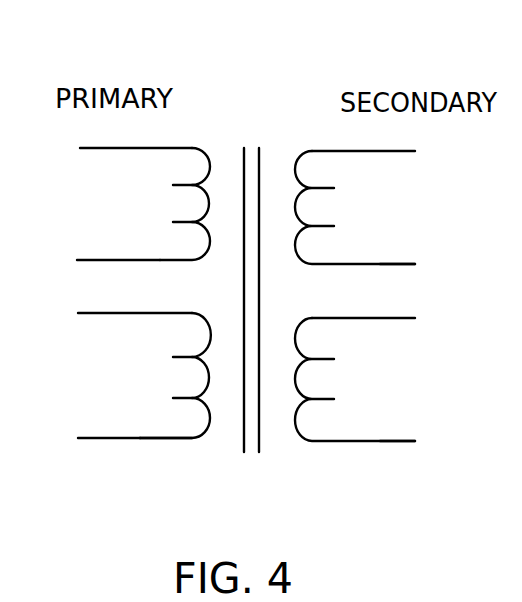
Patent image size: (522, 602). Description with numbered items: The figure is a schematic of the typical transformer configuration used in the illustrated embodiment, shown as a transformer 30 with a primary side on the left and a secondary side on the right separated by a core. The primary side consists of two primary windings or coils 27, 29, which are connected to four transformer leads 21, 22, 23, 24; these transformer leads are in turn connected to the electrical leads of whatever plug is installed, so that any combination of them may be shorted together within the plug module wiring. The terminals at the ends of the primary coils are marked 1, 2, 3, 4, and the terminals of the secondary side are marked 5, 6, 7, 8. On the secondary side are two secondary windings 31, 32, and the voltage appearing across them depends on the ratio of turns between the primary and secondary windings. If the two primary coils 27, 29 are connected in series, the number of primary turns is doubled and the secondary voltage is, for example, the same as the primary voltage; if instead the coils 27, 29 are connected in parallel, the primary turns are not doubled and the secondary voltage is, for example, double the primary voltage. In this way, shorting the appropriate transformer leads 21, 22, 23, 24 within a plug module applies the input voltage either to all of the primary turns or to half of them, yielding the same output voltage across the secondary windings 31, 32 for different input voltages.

The primary winding terminal 1 is at (93, 439).
The primary winding terminal 2 is at (116, 313).
The primary winding terminal 3 is at (100, 258).
The primary winding terminal 4 is at (116, 146).
The secondary winding terminal 5 is at (378, 153).
The secondary winding terminal 6 is at (412, 266).
The secondary winding terminal 7 is at (377, 320).
The secondary winding terminal 8 is at (410, 439).
The transformer lead 21 is at (88, 440).
The transformer lead 22 is at (120, 313).
The transformer lead 23 is at (137, 260).
The transformer lead 24 is at (95, 148).
The primary winding 27 is at (153, 440).
The primary winding 29 is at (205, 210).
The transformer 30 is at (247, 87).
The secondary winding 31 is at (298, 202).
The secondary winding 32 is at (298, 392).